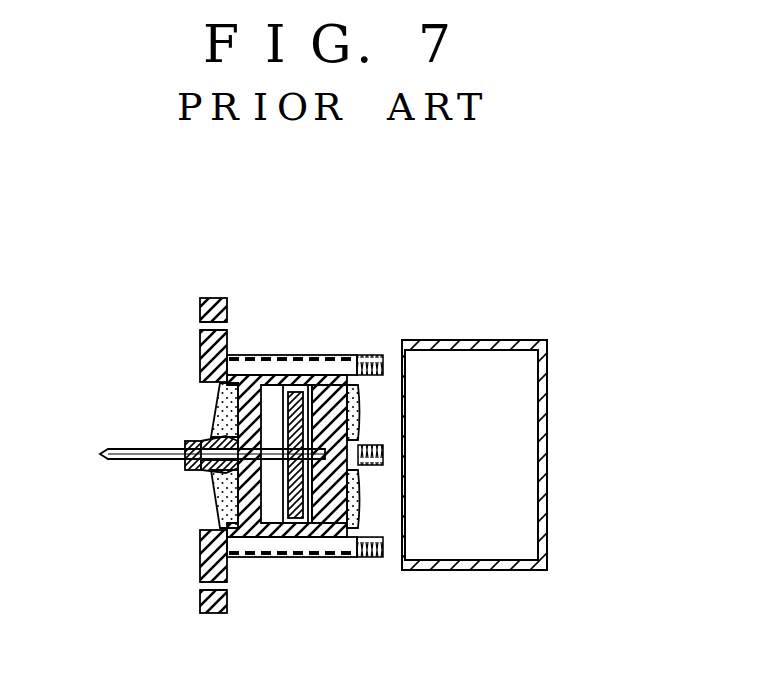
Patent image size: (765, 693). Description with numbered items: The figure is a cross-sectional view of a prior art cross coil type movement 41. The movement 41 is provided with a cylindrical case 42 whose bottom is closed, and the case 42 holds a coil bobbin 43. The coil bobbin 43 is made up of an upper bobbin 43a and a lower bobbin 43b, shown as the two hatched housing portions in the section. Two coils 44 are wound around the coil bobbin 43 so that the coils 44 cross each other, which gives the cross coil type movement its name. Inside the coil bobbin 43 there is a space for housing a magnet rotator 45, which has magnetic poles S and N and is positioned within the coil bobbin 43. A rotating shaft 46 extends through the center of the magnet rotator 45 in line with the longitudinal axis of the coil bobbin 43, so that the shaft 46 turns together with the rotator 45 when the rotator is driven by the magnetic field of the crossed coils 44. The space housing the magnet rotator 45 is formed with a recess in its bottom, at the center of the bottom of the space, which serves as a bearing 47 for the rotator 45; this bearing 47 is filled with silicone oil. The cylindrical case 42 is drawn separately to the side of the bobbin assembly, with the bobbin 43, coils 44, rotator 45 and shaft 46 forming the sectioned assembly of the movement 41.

The movement 41 is at (183, 331).
The cylindrical case 42 is at (547, 441).
The coil bobbin 43 is at (418, 222).
The upper bobbin 43a is at (252, 378).
The lower bobbin 43b is at (333, 388).
The coil 44 is at (225, 405).
The magnet rotator 45 is at (297, 393).
The rotating shaft 46 is at (140, 456).
The bearing 47 is at (322, 470).